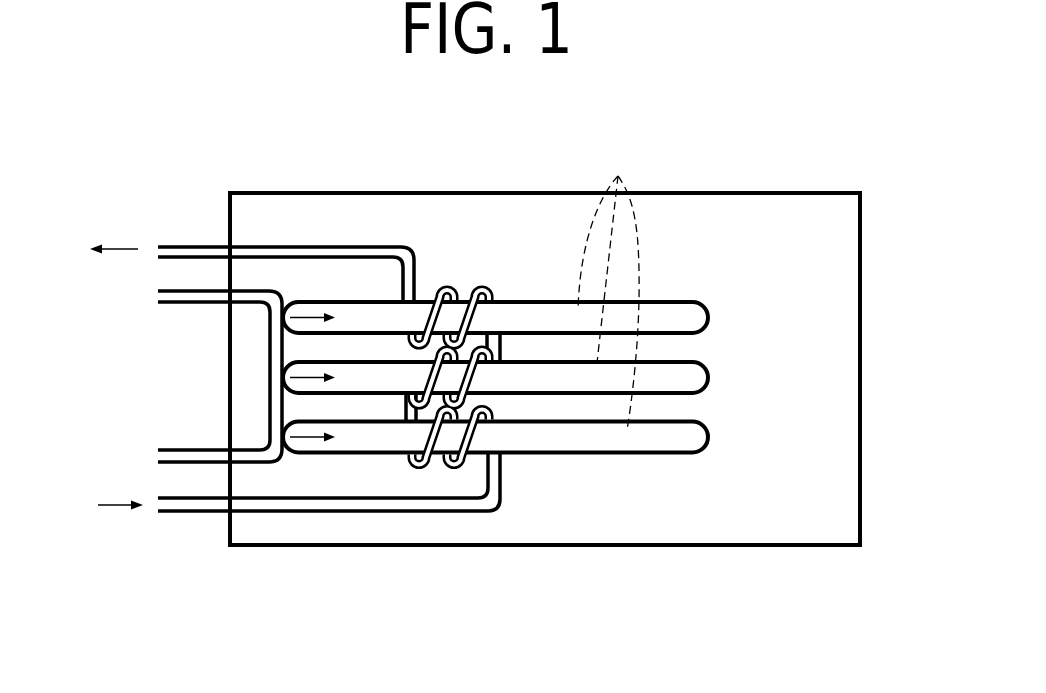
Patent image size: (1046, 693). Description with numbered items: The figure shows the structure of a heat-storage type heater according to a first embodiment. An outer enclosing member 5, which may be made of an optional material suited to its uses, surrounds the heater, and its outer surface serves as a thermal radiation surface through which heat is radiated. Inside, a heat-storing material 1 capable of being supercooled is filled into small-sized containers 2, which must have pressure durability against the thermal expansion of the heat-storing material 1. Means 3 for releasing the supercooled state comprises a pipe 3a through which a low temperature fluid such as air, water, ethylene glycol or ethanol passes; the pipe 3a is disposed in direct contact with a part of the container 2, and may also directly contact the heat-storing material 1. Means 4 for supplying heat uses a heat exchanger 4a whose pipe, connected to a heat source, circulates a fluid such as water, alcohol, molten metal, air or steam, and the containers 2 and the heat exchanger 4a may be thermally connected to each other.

The heat-storing material 1 is at (618, 176).
The small-sized containers 2 is at (710, 436).
The means for releasing the supercooled state 3 is at (223, 391).
The pipe 3a is at (185, 304).
The means for supplying heat 4 is at (336, 519).
The heat exchanger 4a is at (191, 513).
The outer enclosing member 5 is at (862, 475).